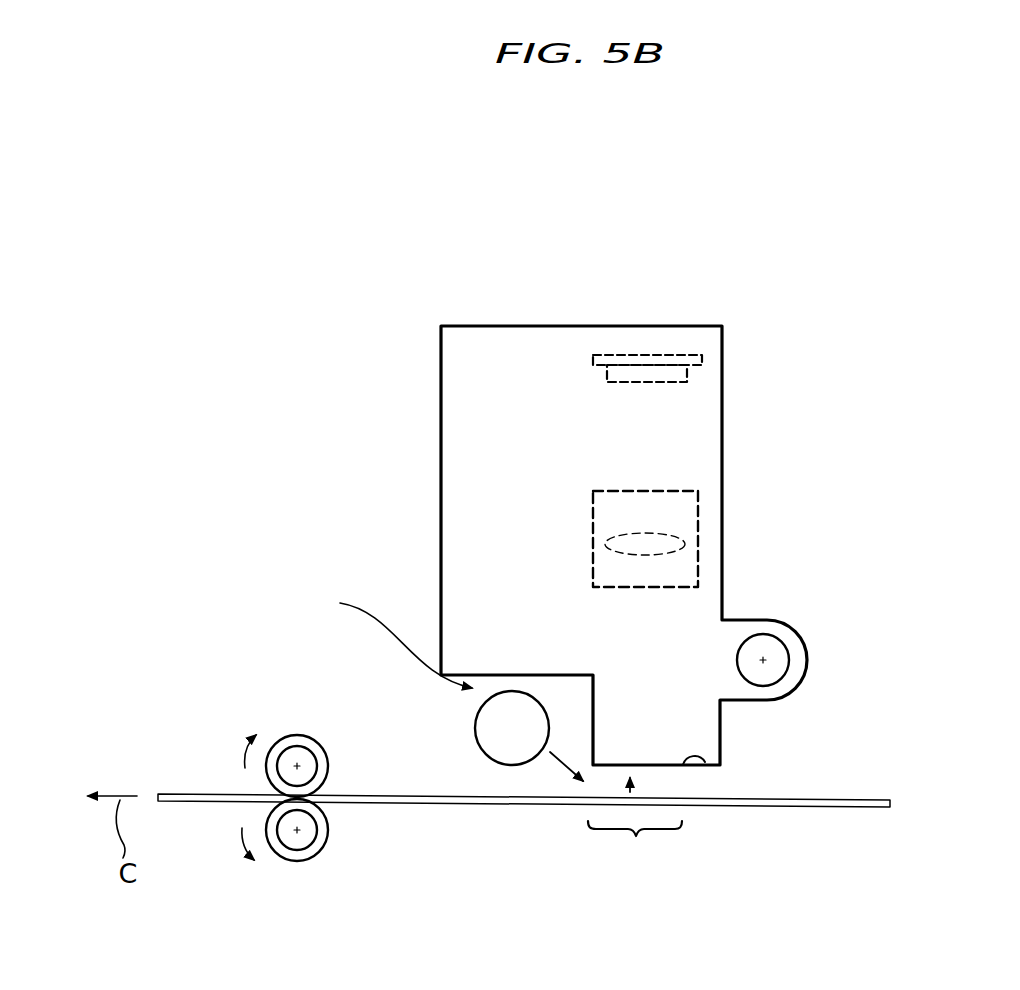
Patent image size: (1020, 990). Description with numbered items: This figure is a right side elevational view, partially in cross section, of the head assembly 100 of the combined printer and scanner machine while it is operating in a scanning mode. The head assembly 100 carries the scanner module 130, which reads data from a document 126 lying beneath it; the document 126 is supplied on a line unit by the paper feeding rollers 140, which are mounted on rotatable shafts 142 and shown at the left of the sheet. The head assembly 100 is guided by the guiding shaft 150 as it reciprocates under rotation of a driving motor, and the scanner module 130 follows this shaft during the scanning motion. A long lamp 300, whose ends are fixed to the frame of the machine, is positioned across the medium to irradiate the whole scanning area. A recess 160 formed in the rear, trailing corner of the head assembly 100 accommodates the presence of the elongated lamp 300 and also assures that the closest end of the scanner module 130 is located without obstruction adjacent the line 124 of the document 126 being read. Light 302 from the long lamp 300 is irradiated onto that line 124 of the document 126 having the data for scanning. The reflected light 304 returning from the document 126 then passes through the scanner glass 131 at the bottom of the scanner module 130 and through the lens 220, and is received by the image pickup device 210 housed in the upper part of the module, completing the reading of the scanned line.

The head assembly 100 is at (594, 277).
The scanner module 130 is at (722, 392).
The image pickup device 210 is at (648, 352).
The lens 220 is at (688, 517).
The guiding shaft 150 is at (769, 647).
The scanner glass 131 is at (705, 762).
The recess 160 is at (375, 635).
The long lamp 300 is at (475, 727).
The light 302 is at (560, 763).
The line 124 is at (635, 826).
The reflected light 304 is at (630, 792).
The document 126 is at (783, 807).
The paper feeding rollers 140 is at (298, 737).
The rotatable shafts 142 is at (303, 823).